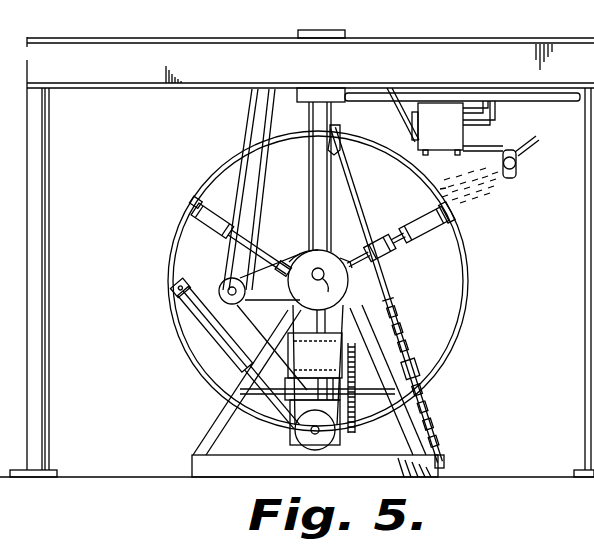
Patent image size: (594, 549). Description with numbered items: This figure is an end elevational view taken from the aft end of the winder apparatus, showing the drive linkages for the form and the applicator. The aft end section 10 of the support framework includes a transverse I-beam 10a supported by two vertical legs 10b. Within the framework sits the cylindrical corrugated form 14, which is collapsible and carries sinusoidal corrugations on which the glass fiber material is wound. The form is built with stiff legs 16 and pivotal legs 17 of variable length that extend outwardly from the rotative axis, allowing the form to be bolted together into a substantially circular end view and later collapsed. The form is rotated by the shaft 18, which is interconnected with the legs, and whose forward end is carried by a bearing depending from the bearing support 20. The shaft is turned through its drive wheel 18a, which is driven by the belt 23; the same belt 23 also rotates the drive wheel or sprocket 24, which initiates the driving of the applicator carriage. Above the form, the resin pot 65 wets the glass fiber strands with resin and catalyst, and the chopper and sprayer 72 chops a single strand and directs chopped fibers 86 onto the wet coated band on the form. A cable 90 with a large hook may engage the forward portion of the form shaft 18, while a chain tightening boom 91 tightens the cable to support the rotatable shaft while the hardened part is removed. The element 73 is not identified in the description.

The aft end section of the support framework 10 is at (133, 37).
The I-beam 10a is at (404, 58).
The vertical legs 10b is at (50, 323).
The cylindrical corrugated form 14 is at (190, 203).
The stiff legs 16 is at (398, 250).
The pivotal legs 17 is at (242, 240).
The form shaft 18 is at (318, 280).
The drive wheel 18a is at (308, 257).
The bearing support 20 is at (309, 189).
The belt 23 is at (343, 260).
The drive wheel or sprocket 24 is at (228, 284).
The resin pot 65 is at (437, 129).
The chopper and sprayer 72 is at (519, 171).
The supply pipe 73 is at (530, 141).
The chopped fibers 86 is at (468, 200).
The cable 90 is at (368, 206).
The chain tightening boom 91 is at (408, 362).